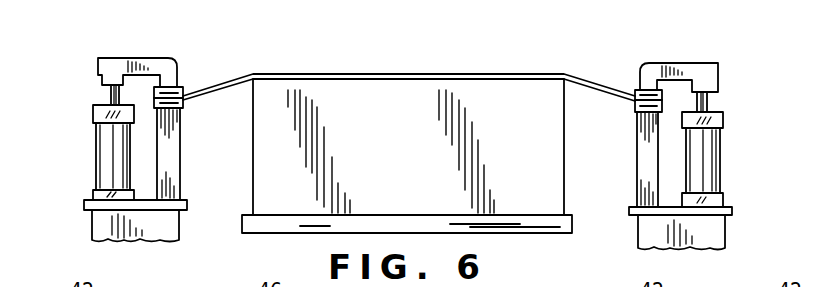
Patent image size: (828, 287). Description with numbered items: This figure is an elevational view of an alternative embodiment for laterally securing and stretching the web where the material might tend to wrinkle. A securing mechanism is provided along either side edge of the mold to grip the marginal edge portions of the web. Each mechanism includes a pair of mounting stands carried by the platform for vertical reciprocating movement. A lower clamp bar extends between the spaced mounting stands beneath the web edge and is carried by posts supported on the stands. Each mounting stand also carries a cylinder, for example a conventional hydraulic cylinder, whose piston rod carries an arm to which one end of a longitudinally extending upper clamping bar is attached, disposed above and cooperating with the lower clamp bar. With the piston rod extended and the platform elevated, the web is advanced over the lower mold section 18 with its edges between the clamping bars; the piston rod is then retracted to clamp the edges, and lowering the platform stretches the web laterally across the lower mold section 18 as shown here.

The lower mold section 18 is at (258, 187).